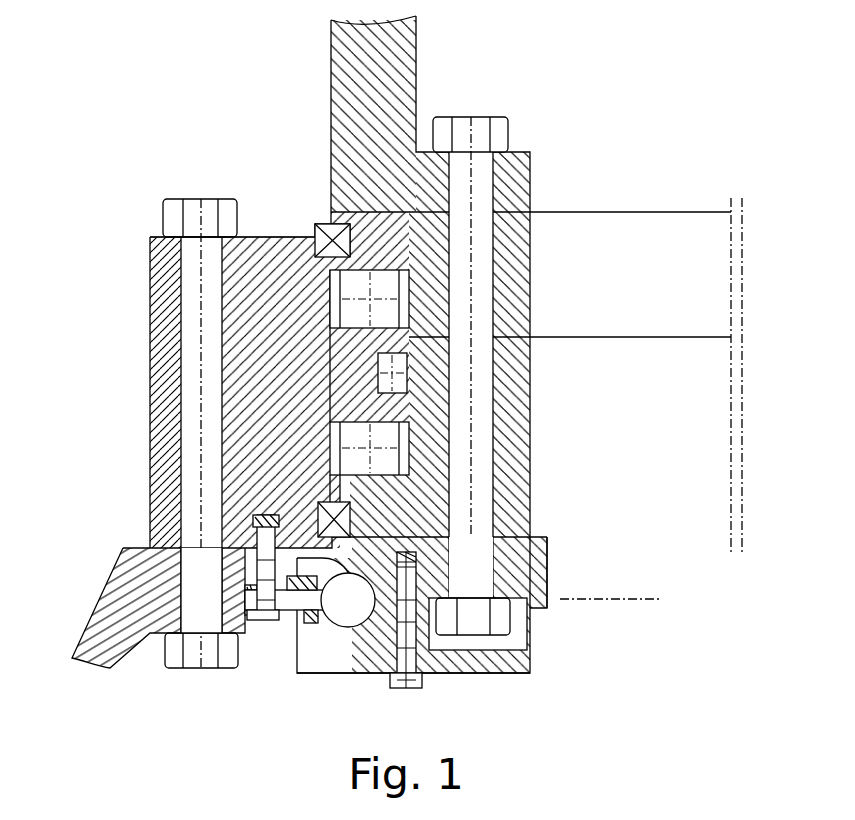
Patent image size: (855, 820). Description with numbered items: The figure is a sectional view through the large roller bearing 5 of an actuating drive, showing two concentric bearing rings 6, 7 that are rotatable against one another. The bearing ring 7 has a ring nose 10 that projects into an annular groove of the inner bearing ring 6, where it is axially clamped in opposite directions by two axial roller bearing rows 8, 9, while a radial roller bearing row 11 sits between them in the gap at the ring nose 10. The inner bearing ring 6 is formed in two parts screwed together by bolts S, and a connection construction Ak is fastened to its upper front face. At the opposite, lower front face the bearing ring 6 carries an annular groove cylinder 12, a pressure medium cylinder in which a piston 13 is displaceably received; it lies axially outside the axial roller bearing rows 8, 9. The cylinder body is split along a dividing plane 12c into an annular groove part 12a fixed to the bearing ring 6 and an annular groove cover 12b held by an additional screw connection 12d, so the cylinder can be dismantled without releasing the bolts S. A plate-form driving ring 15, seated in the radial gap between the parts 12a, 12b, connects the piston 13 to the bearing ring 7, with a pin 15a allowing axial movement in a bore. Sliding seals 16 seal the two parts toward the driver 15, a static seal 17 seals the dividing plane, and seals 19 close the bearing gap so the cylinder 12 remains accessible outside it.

The large roller bearing 5 is at (175, 165).
The inner bearing ring 6 is at (530, 268).
The bearing ring 7 is at (164, 297).
The axial roller bearing row 8 is at (333, 224).
The axial roller bearing row 9 is at (410, 455).
The ring nose 10 is at (410, 326).
The radial roller bearing row 11 is at (408, 370).
The annular groove cylinder 12 is at (294, 626).
The annular groove part 12a is at (540, 582).
The annular groove cover 12b is at (522, 661).
The dividing plane 12c is at (637, 603).
The additional screw connection 12d is at (414, 677).
The piston 13 is at (520, 616).
The driving ring 15 is at (148, 640).
The pin 15a is at (283, 578).
The sliding seal 16 is at (288, 600).
The static seal 17 is at (344, 628).
The seal 19 is at (385, 265).
The connection construction Ak is at (398, 60).
The bolt S is at (470, 133).